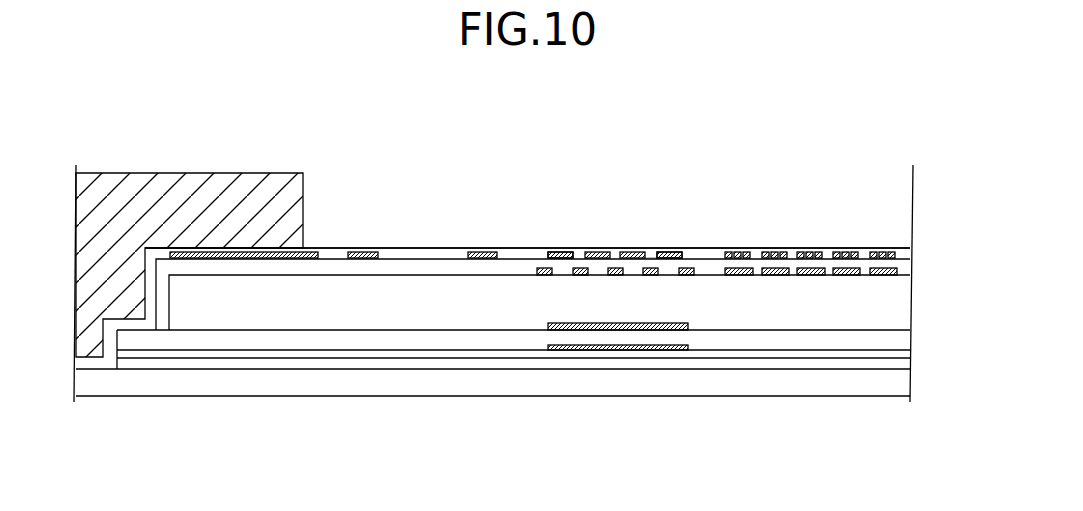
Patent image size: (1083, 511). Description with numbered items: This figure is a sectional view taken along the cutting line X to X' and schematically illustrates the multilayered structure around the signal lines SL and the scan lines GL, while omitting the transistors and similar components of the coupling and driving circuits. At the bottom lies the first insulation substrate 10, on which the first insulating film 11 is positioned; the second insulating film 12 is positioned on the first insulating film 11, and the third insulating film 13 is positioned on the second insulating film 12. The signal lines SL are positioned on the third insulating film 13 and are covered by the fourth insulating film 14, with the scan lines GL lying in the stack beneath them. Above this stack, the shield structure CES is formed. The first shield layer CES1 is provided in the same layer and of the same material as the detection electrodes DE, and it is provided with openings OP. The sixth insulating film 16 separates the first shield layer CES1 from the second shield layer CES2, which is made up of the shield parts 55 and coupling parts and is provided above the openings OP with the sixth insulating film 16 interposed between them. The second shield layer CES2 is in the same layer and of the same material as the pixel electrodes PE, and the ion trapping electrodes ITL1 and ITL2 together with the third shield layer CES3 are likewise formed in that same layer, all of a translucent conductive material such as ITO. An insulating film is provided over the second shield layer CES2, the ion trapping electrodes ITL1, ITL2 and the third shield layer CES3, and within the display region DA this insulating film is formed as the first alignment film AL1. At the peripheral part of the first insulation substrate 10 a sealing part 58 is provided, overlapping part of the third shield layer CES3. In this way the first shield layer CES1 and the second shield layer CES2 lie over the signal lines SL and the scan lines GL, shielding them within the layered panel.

The first insulation substrate 10 is at (905, 383).
The first insulating film 11 is at (905, 365).
The second insulating film 12 is at (905, 356).
The third insulating film 13 is at (905, 342).
The fourth insulating film 14 is at (905, 303).
The sixth insulating film 16 is at (905, 268).
The first alignment film AL1 is at (910, 250).
The sealing part 58 is at (174, 184).
The third shield layer CES3 is at (249, 255).
The ion trapping electrode ITL1 is at (361, 252).
The ion trapping electrode ITL2 is at (478, 252).
The shield layer CES is at (616, 193).
The second shield layer CES2 is at (592, 253).
The shield parts 55 is at (615, 255).
The first shield layer CES1 is at (579, 268).
The openings OP is at (657, 262).
The display region DA is at (811, 210).
The pixel electrodes PE is at (748, 253).
The detection electrodes DE is at (898, 195).
The scan lines GL is at (575, 351).
The signal lines SL is at (641, 331).
The section line start X is at (75, 267).
The section line end X' is at (915, 267).